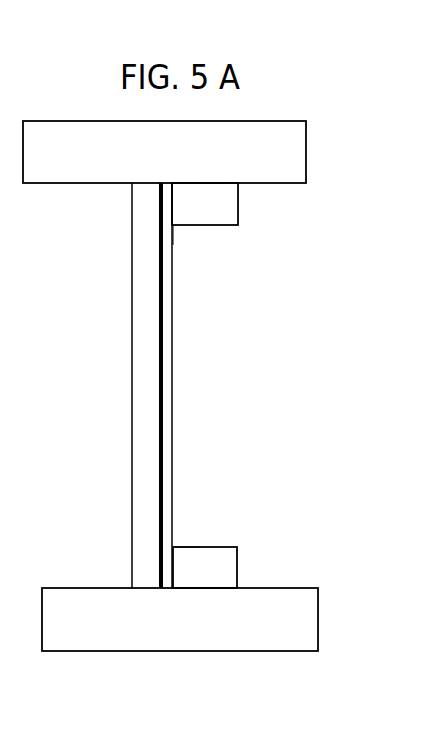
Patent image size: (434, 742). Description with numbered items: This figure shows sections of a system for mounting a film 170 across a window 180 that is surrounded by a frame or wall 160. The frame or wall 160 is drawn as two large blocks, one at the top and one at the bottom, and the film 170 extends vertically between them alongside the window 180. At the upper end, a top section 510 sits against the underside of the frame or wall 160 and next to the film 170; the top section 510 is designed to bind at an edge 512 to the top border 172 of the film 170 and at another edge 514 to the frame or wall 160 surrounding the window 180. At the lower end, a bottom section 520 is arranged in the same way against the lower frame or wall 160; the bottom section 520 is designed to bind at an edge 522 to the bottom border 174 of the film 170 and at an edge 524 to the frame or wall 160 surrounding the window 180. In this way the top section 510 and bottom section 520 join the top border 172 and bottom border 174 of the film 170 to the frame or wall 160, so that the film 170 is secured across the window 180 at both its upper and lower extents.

The frame or wall 160 is at (156, 162).
The film 170 is at (173, 372).
The top border 172 is at (166, 201).
The bottom border 174 is at (166, 576).
The window 180 is at (131, 476).
The top section 510 is at (226, 214).
The edge 512 is at (181, 234).
The edge 514 is at (211, 180).
The bottom section 520 is at (226, 578).
The edge 522 is at (185, 541).
The edge 524 is at (214, 596).